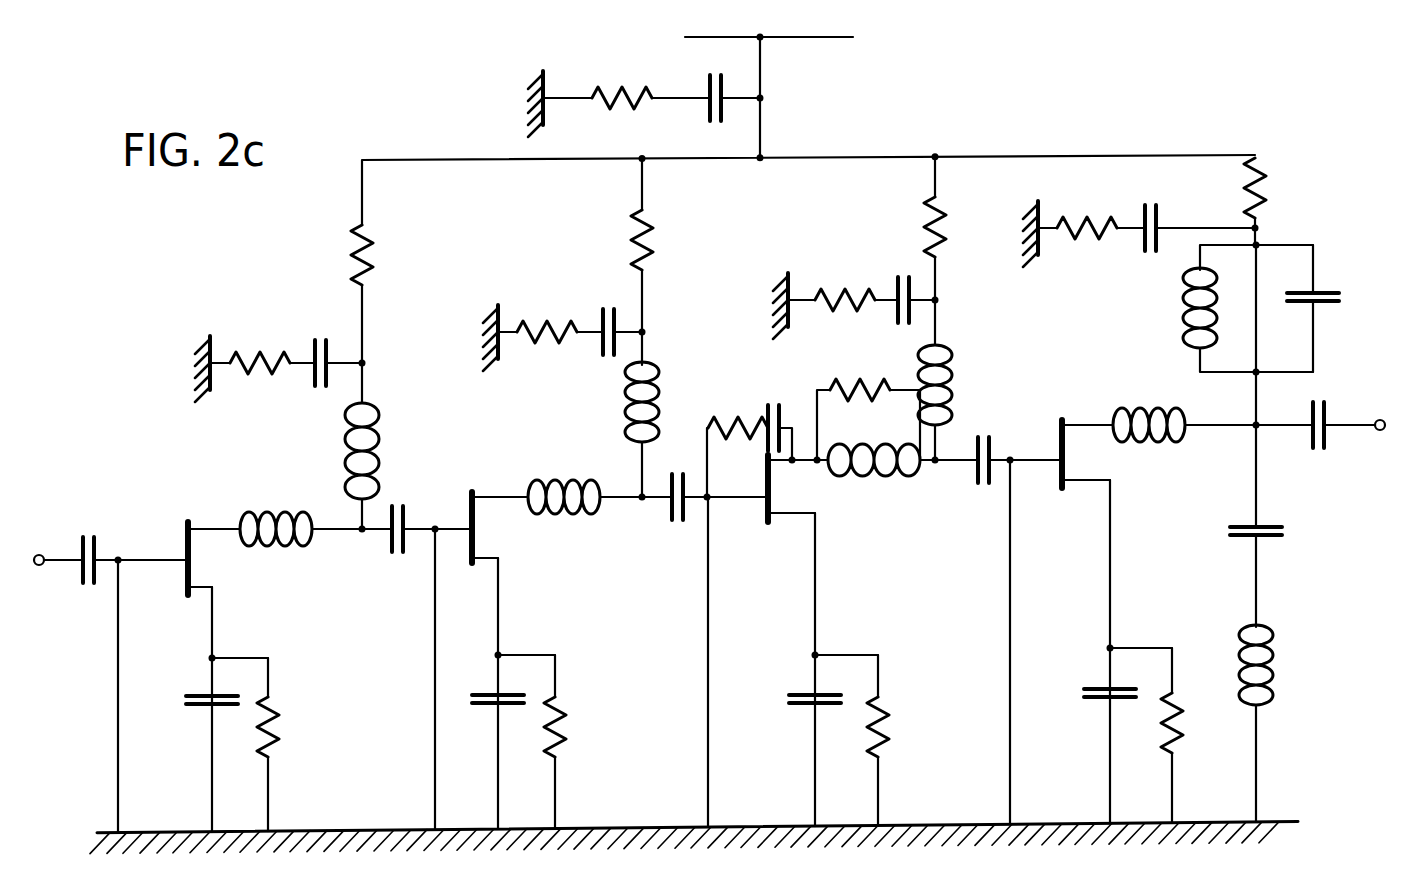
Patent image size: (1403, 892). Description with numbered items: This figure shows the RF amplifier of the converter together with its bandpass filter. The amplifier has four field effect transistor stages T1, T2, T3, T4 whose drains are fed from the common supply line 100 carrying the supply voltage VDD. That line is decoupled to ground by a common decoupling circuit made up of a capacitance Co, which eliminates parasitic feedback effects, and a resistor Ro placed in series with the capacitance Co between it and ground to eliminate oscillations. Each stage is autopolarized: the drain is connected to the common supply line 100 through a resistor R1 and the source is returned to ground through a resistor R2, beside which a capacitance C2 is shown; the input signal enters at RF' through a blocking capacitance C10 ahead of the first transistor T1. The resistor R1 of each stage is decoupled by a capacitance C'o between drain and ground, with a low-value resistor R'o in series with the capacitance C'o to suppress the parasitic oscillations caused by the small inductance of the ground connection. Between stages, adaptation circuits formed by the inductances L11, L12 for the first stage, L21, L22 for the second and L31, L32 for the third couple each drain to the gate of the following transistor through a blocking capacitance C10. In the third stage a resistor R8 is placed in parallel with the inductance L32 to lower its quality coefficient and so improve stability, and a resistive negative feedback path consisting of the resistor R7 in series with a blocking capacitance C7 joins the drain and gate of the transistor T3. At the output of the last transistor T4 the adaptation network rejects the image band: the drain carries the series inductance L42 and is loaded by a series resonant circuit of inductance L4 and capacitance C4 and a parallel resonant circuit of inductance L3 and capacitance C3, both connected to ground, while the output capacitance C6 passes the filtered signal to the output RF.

The common supply line 100 is at (1196, 148).
The supply voltage VDD is at (814, 90).
The resistor Ro is at (619, 92).
The capacitance Co is at (721, 83).
The resistor R1 is at (828, 260).
The resistor R'o is at (670, 283).
The capacitance C'o is at (785, 275).
The inductance L11 is at (344, 446).
The inductance L12 is at (290, 510).
The inductance L21 is at (621, 416).
The inductance L22 is at (557, 478).
The inductance L31 is at (958, 382).
The inductance L32 is at (851, 442).
The inductance L42 is at (1187, 406).
The inductance L3 is at (1248, 308).
The inductance L4 is at (1274, 723).
The capacitance C3 is at (1327, 308).
The capacitance C4 is at (1276, 577).
The output capacitance C6 is at (1336, 449).
The blocking capacitance C7 is at (778, 417).
The resistor R7 is at (737, 435).
The resistor R8 is at (880, 366).
The blocking capacitance C10 is at (560, 530).
The source bypass capacitor C2 is at (661, 656).
The resistor R2 is at (739, 739).
The field effect transistor T1 is at (203, 562).
The field effect transistor T2 is at (486, 532).
The field effect transistor T3 is at (791, 488).
The field effect transistor T4 is at (1080, 451).
The RF input terminal RF' is at (58, 543).
The RF output terminal RF is at (1374, 447).